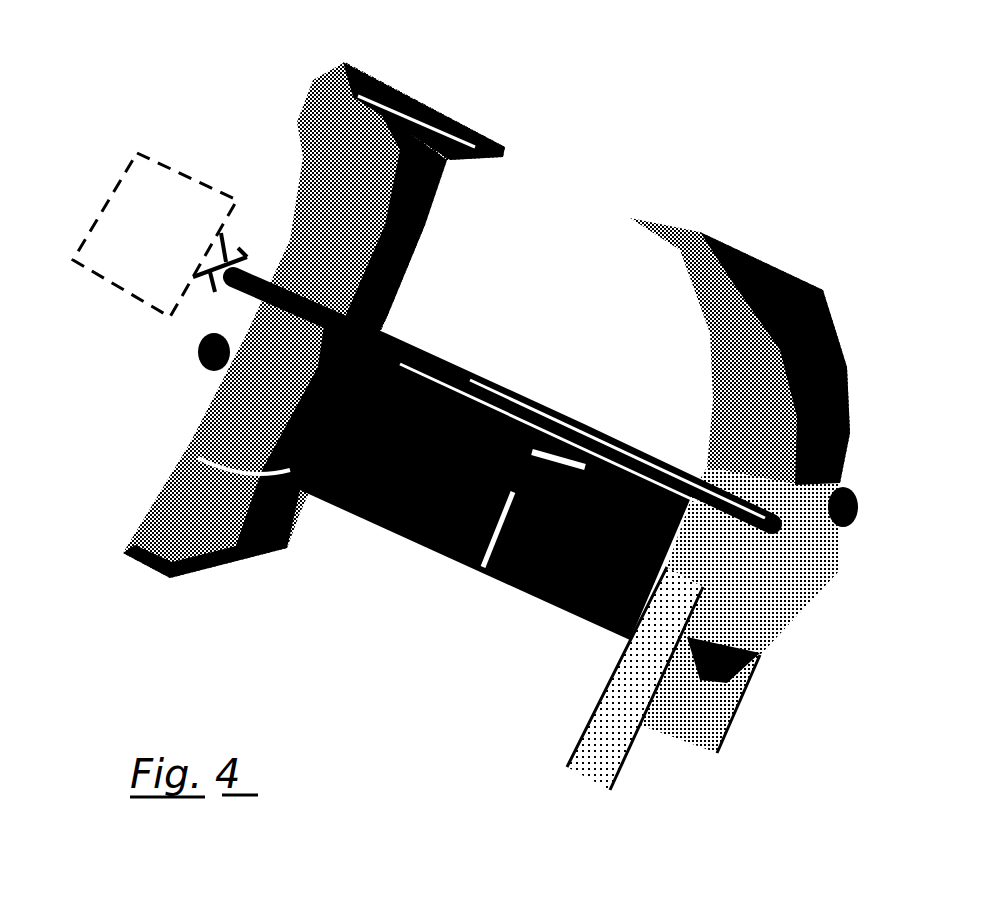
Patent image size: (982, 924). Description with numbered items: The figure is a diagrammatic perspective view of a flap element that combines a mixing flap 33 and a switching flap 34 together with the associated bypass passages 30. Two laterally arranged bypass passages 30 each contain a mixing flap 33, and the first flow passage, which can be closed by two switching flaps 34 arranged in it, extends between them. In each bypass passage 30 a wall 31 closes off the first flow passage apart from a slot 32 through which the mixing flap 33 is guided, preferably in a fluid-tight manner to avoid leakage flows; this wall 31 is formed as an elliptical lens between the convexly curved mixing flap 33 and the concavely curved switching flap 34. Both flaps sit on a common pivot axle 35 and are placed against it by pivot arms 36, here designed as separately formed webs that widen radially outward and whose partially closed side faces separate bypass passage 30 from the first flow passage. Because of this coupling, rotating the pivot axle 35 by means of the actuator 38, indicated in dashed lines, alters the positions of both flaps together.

The bypass passage 30 is at (465, 426).
The wall 31 is at (383, 333).
The slot 32 is at (192, 452).
The mixing flap 33 is at (838, 568).
The switching flap 34 is at (210, 410).
The pivot axle 35 is at (590, 430).
The pivot arm 36 is at (515, 492).
The actuator 38 is at (172, 246).